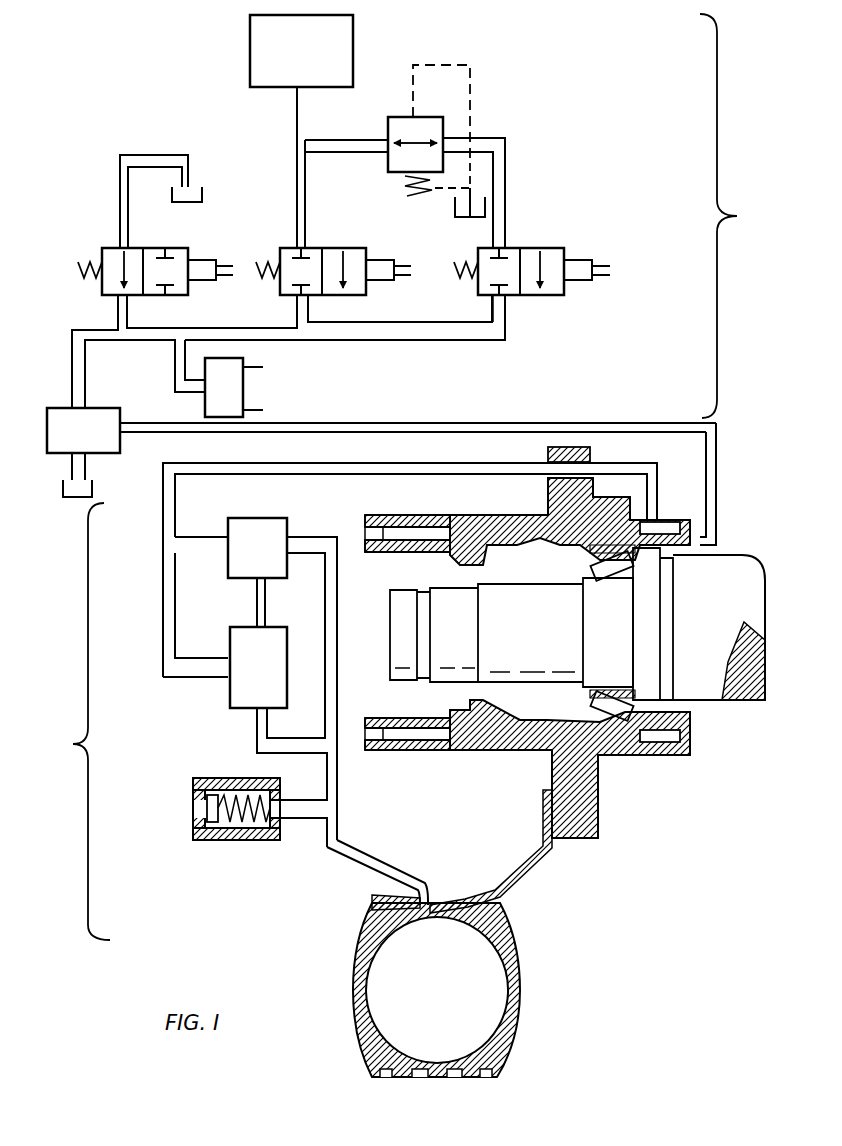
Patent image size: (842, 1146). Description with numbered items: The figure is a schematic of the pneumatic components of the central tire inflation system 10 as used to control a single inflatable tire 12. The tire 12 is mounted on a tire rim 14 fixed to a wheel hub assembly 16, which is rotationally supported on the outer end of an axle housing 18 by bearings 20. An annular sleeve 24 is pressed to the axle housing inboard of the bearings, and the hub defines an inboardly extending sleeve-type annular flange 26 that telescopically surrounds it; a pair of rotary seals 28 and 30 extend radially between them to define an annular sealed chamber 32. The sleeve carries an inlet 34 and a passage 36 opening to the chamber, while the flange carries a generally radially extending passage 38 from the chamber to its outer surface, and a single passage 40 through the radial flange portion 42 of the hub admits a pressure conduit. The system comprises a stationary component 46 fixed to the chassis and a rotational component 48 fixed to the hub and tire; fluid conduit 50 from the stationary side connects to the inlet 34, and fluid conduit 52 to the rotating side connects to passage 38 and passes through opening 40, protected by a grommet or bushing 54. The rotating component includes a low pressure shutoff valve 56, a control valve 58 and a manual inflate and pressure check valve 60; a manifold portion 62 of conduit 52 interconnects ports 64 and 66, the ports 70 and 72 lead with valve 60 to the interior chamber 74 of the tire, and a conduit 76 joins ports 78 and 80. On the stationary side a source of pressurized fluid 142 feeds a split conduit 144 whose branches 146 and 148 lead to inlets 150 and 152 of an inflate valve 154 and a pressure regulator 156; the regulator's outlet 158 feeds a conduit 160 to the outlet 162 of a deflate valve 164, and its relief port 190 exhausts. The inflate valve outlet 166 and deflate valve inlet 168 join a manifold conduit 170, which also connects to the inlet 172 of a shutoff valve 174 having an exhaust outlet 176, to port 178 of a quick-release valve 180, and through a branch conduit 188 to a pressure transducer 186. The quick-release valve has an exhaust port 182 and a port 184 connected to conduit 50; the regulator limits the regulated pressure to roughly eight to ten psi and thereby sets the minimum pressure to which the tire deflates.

The central tire inflation system 10 is at (672, 392).
The inflatable tire 12 is at (518, 968).
The tire rim 14 is at (495, 912).
The wheel hub assembly 16 is at (486, 752).
The axle housing 18 is at (720, 700).
The bearings 20 is at (612, 678).
The annular sleeve 24 is at (665, 700).
The sleeve-type annular flange 26 is at (683, 758).
The rotary seal 28 is at (635, 760).
The rotary seal 30 is at (712, 752).
The annular sealed chamber 32 is at (658, 760).
The inlet 34 is at (720, 548).
The passage 36 is at (680, 556).
The radially extending passage 38 is at (645, 525).
The passage 40 is at (552, 498).
The radial flange portion 42 is at (545, 810).
The stationary component 46 is at (736, 216).
The rotational component 48 is at (64, 721).
The fluid conduit 50 is at (636, 420).
The fluid conduit 52 is at (650, 466).
The grommet or bushing 54 is at (548, 452).
The low pressure shutoff valve 56 is at (244, 515).
The control valve 58 is at (243, 715).
The manual inflate and pressure check valve 60 is at (192, 808).
The manifold portion 62 is at (163, 604).
The port 64 is at (228, 537).
The port 66 is at (228, 668).
The port 70 is at (297, 537).
The port 72 is at (270, 720).
The interior chamber 74 is at (438, 973).
The conduit 76 is at (268, 608).
The port 78 is at (253, 592).
The port 80 is at (255, 622).
The source of pressurized fluid 142 is at (250, 50).
The split conduit 144 is at (297, 116).
The branch 146 is at (297, 174).
The branch 148 is at (348, 140).
The inlet 150 is at (292, 248).
The inlet 152 is at (386, 132).
The inflate valve 154 is at (346, 248).
The pressure regulator 156 is at (470, 110).
The outlet 158 is at (447, 150).
The conduit 160 is at (505, 190).
The outlet 162 is at (498, 248).
The deflate valve 164 is at (562, 300).
The outlet 166 is at (297, 305).
The inlet 168 is at (503, 300).
The manifold conduit 170 is at (402, 340).
The inlet 172 is at (118, 300).
The shutoff valve 174 is at (150, 250).
The outlet 176 is at (120, 240).
The port 178 is at (72, 388).
The quick-release valve 180 is at (108, 462).
The port 182 is at (72, 468).
The port 184 is at (128, 432).
The pressure transducer 186 is at (248, 386).
The branch conduit 188 is at (185, 347).
The relief port 190 is at (393, 178).